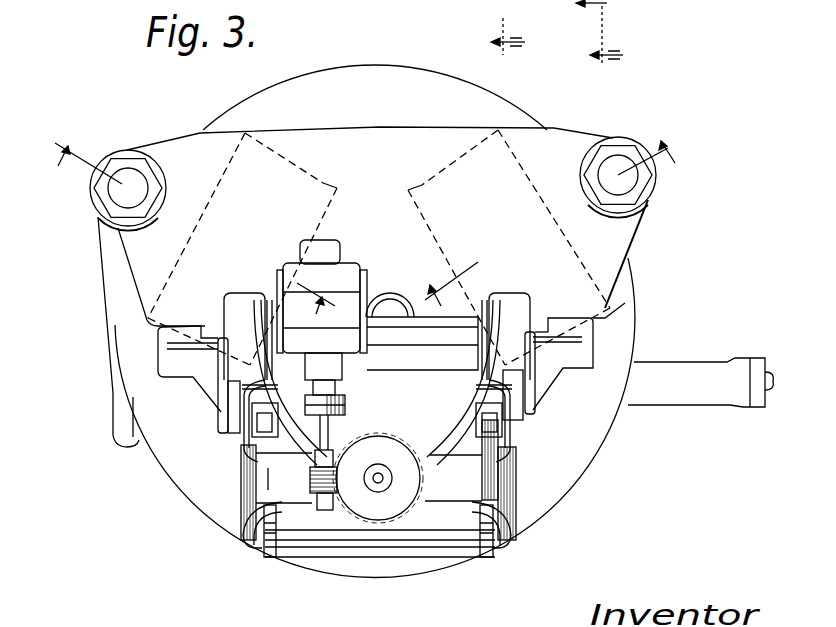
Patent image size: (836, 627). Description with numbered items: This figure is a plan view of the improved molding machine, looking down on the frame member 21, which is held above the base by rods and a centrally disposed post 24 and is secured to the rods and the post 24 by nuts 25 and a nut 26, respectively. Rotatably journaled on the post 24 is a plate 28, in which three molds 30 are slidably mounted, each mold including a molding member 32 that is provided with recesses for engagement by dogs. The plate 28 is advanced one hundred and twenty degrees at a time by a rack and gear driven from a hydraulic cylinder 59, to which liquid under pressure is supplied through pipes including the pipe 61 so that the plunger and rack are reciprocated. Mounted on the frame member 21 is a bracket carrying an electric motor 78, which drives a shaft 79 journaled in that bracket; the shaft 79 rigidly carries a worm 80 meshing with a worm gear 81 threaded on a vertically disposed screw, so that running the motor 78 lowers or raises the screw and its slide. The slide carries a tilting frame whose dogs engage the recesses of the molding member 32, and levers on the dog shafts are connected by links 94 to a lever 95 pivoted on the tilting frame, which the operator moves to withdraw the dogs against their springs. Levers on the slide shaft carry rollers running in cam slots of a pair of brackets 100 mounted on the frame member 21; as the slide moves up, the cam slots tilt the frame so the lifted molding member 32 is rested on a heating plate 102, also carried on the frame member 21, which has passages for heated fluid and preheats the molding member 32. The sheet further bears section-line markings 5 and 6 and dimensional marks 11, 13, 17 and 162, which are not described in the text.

The section line 5- 5 is at (189, 227).
The section line 6- 6 is at (549, 222).
The dimension mark 11 is at (587, 31).
The dimension mark 13 is at (606, 69).
The dimension mark 17 is at (506, 60).
The dimension mark 162 is at (510, 27).
The frame member 21 is at (555, 145).
The post 24 is at (378, 310).
The nuts 25 is at (110, 198).
The nut 26 is at (397, 292).
The plate 28 is at (623, 303).
The molds 30 is at (418, 184).
The molding member 32 is at (468, 523).
The hydraulic cylinder 59 is at (685, 370).
The pipe 61 is at (769, 392).
The electric motor 78 is at (326, 270).
The shaft 79 is at (331, 428).
The worm 80 is at (313, 506).
The worm gear 81 is at (405, 510).
The links 94 is at (328, 556).
The lever 95 is at (374, 549).
The brackets 100 is at (222, 421).
The heating plate 102 is at (436, 356).